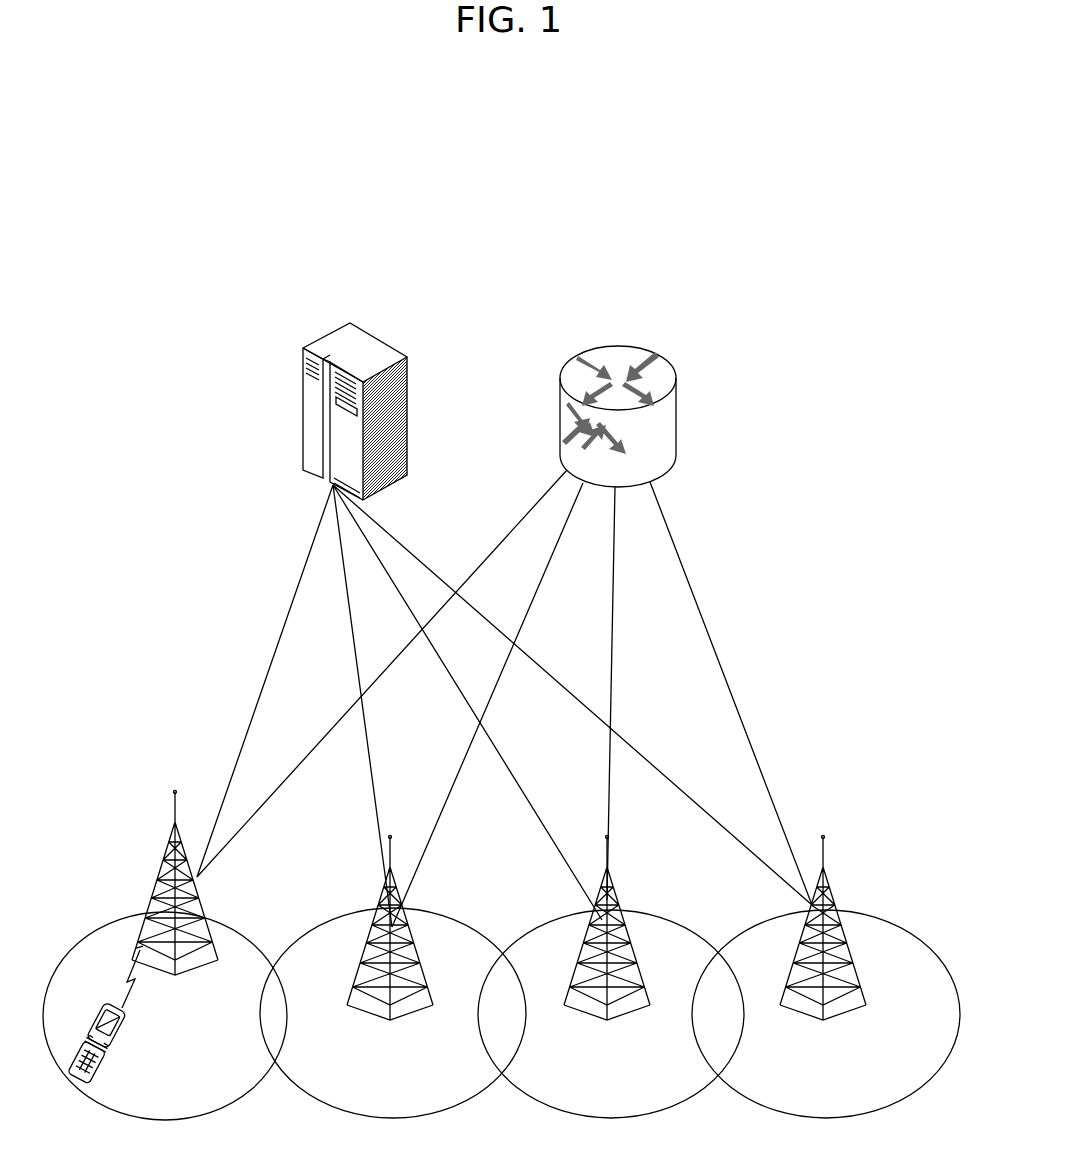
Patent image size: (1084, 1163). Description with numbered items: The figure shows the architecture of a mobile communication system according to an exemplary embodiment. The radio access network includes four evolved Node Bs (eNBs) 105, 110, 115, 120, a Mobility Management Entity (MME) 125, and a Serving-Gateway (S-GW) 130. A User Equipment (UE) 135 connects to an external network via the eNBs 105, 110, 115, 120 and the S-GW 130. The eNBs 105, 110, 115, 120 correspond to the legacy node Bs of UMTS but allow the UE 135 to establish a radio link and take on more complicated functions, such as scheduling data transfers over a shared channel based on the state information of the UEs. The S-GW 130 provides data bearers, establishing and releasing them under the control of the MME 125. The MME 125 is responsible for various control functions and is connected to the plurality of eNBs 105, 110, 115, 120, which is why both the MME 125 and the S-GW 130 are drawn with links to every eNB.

The evolved Node B 105 is at (160, 860).
The evolved Node B 110 is at (383, 890).
The evolved Node B 115 is at (617, 890).
The evolved Node B 120 is at (833, 890).
The Mobility Management Entity 125 is at (338, 343).
The Serving-Gateway 130 is at (613, 353).
The User Equipment 135 is at (118, 1037).